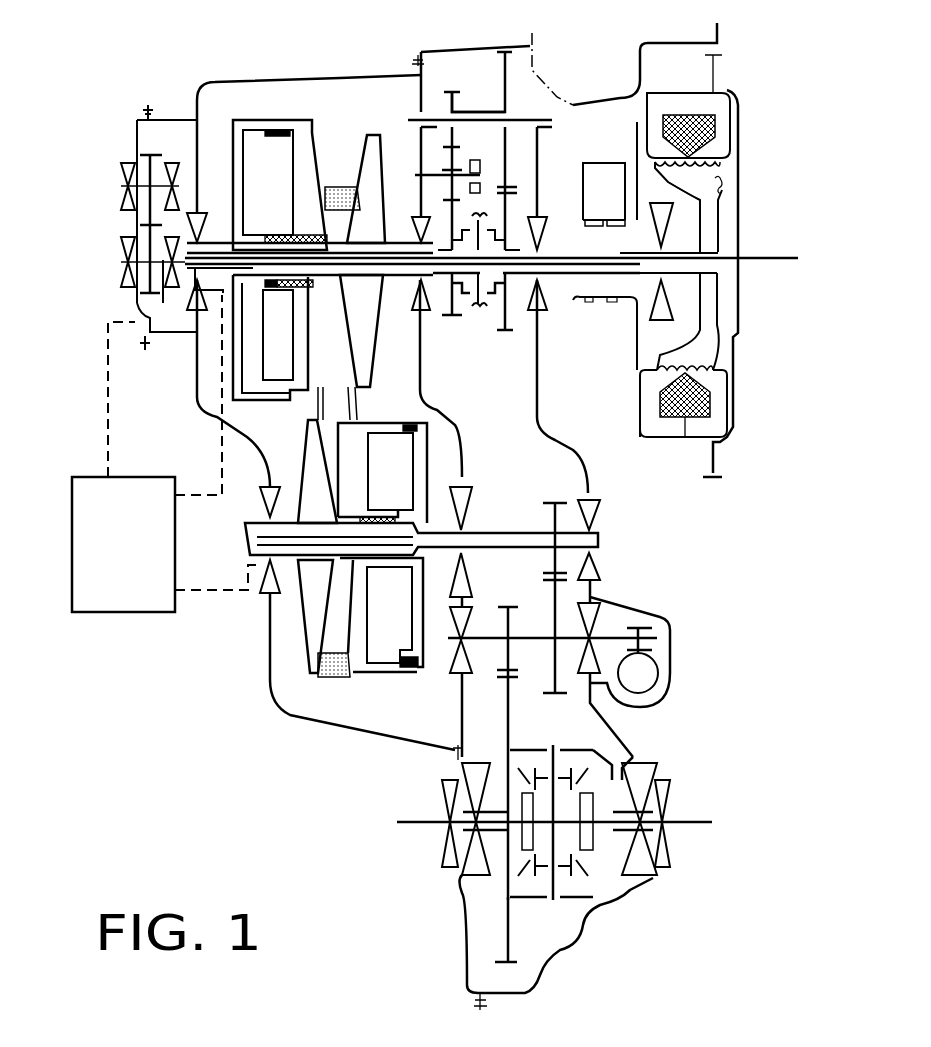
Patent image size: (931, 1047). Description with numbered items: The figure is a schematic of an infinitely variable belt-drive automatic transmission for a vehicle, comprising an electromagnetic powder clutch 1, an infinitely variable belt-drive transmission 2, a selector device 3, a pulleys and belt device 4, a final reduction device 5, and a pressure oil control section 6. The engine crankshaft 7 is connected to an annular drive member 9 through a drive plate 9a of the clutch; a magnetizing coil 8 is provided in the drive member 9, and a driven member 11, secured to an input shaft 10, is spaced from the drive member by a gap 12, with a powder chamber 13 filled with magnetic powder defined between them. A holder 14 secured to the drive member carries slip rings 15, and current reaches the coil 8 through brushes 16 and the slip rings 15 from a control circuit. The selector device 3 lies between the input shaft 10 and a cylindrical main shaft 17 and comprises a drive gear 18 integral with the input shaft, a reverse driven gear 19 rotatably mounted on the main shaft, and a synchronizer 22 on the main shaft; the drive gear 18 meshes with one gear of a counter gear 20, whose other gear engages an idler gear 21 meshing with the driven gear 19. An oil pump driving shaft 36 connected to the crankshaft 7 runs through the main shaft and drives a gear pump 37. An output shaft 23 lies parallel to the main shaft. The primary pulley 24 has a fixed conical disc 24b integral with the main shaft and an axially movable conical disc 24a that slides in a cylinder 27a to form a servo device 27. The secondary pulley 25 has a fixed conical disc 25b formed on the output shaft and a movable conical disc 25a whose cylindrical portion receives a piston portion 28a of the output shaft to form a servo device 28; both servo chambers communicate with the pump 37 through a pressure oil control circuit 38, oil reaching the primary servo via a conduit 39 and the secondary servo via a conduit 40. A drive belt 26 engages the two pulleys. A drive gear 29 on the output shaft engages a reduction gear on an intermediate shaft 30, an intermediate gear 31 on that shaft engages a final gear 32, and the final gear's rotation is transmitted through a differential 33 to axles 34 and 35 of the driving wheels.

The electromagnetic powder clutch 1 is at (740, 420).
The infinitely variable belt-drive transmission 2 is at (215, 80).
The selector device 3 is at (478, 62).
The pulleys and belt device 4 is at (332, 110).
The final reduction device 5 is at (503, 760).
The pressure oil control section 6 is at (94, 471).
The crankshaft 7 is at (790, 260).
The magnetizing coil 8 is at (633, 83).
The annular drive member 9 is at (688, 100).
The drive plate 9a is at (738, 345).
The input shaft 10 is at (563, 280).
The driven member 11 is at (723, 167).
The gap 12 is at (640, 160).
The powder chamber 13 is at (722, 178).
The holder 14 is at (633, 163).
The slip rings 15 is at (598, 228).
The brushes 16 is at (595, 198).
The main shaft 17 is at (443, 290).
The drive gear 18 is at (507, 333).
The reverse driven gear 19 is at (456, 328).
The counter gear 20 is at (450, 97).
The idler gear 21 is at (445, 160).
The synchronizer 22 is at (478, 308).
The output shaft 23 is at (497, 533).
The primary pulley 24 is at (347, 178).
The axially movable conical disc 24a is at (300, 130).
The fixed conical disc 24b is at (373, 132).
The secondary pulley 25 is at (372, 674).
The movable conical disc 25a is at (397, 672).
The fixed conical disc 25b is at (307, 670).
The drive belt 26 is at (352, 400).
The servo device 27 is at (273, 337).
The cylinder 27a is at (253, 120).
The servo device 28 is at (382, 473).
The piston portion 28a is at (405, 431).
The drive gear 29 is at (543, 578).
The intermediate shaft 30 is at (530, 638).
The intermediate gear 31 is at (513, 605).
The final gear 32 is at (513, 967).
The differential 33 is at (593, 912).
The axle 34 is at (693, 820).
The axle 35 is at (423, 822).
The oil pump driving shaft 36 is at (132, 258).
The gear pump 37 is at (132, 158).
The pressure oil control circuit 38 is at (137, 476).
The conduit 39 is at (222, 474).
The conduit 40 is at (192, 594).